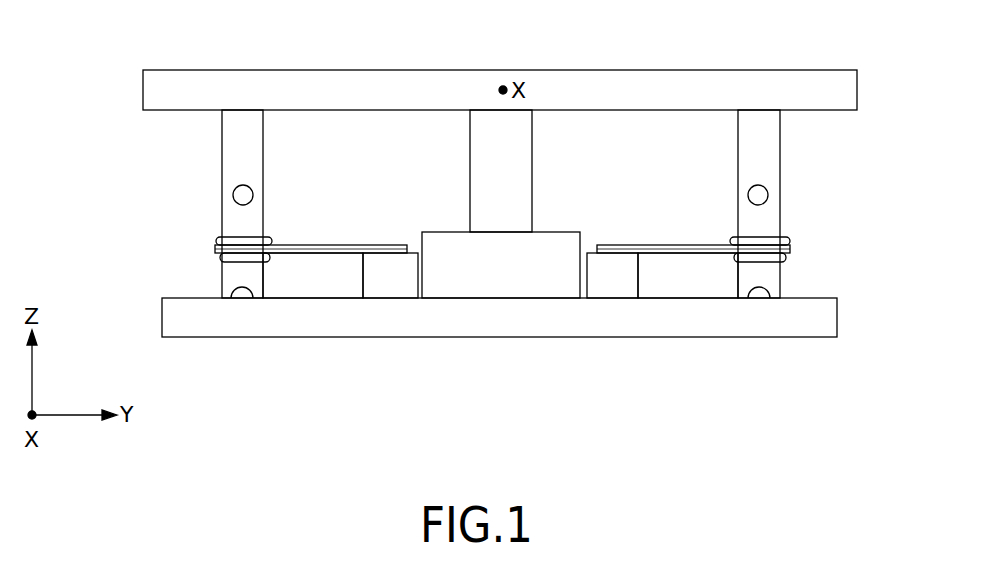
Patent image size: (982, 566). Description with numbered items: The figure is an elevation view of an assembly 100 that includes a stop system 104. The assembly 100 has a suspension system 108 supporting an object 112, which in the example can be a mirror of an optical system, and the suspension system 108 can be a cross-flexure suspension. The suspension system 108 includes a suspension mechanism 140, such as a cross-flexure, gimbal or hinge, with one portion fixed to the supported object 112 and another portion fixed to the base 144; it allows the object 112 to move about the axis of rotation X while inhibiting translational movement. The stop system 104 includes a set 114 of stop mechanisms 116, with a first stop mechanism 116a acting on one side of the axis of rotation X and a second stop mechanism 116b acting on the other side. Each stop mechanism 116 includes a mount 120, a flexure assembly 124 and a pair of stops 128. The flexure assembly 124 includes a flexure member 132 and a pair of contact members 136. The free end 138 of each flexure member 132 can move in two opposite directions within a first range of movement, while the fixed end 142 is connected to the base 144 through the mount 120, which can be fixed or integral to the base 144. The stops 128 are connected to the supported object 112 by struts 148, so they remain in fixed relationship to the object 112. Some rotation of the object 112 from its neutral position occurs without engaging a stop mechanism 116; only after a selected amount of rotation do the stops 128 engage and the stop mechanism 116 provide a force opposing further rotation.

The assembly 100 is at (702, 38).
The stop system 104 is at (833, 250).
The suspension system 108 is at (548, 166).
The supported object 112 is at (853, 88).
The set of stop mechanisms 114 is at (192, 240).
The stop mechanism 116 is at (196, 249).
The first stop mechanism 116a is at (356, 232).
The second stop mechanism 116b is at (692, 232).
The mount 120 is at (390, 288).
The flexure assembly 124 is at (268, 245).
The stop 128 is at (233, 195).
The flexure member 132 is at (300, 245).
The contact member 136 is at (225, 238).
The free end 138 is at (250, 256).
The suspension mechanism 140 is at (480, 155).
The fixed end 142 is at (392, 245).
The base 144 is at (772, 320).
The strut 148 is at (235, 150).